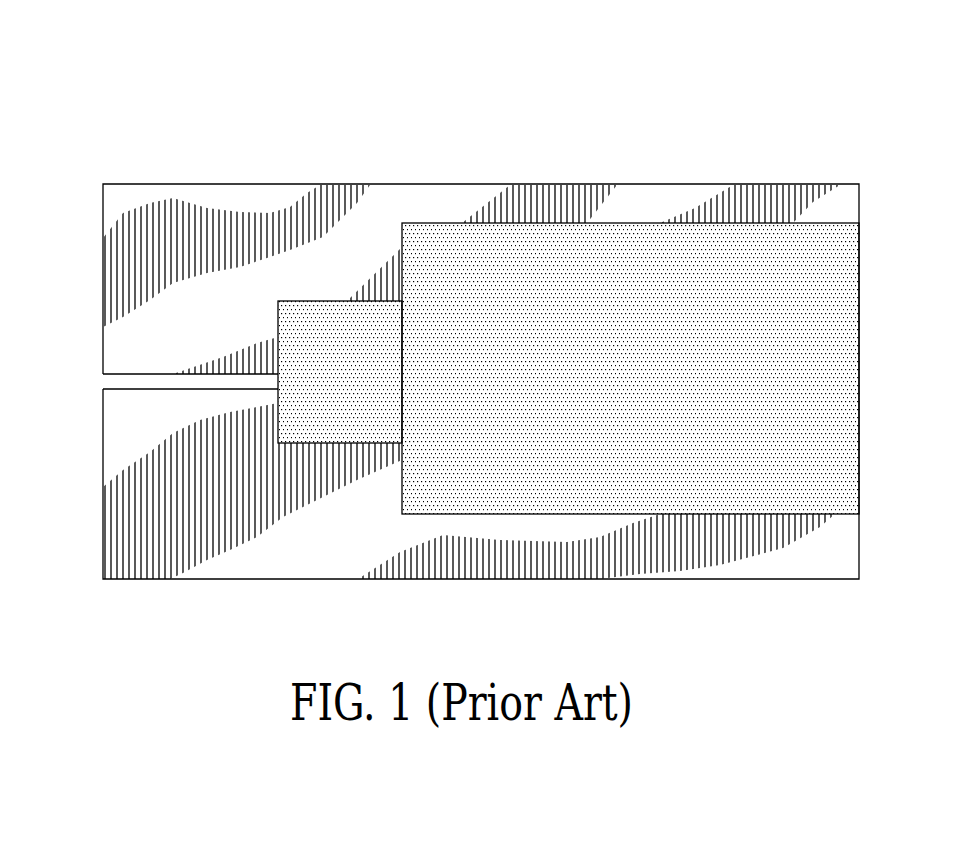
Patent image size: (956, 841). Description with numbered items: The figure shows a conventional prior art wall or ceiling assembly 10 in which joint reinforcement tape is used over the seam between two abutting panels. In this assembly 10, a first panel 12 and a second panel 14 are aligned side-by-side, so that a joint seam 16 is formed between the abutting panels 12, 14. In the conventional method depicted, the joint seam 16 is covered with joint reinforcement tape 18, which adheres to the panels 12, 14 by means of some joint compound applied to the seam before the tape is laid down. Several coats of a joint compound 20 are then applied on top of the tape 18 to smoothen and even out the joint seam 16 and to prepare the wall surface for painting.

The wall or ceiling assembly 10 is at (93, 133).
The first panel 12 is at (838, 200).
The second panel 14 is at (840, 562).
The joint seam 16 is at (102, 381).
The joint reinforcement tape 18 is at (312, 321).
The joint compound 20 is at (594, 248).